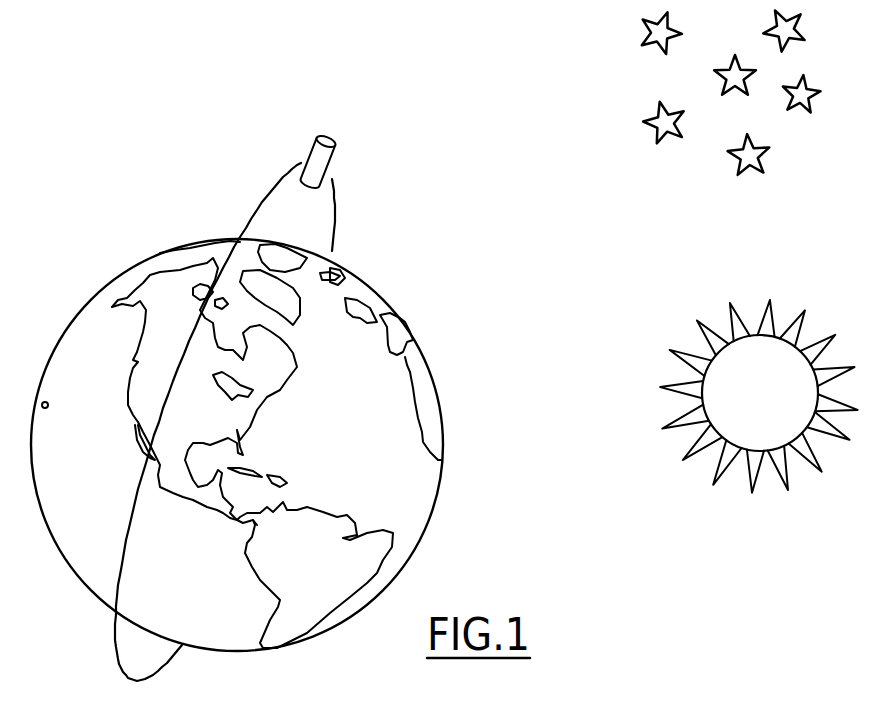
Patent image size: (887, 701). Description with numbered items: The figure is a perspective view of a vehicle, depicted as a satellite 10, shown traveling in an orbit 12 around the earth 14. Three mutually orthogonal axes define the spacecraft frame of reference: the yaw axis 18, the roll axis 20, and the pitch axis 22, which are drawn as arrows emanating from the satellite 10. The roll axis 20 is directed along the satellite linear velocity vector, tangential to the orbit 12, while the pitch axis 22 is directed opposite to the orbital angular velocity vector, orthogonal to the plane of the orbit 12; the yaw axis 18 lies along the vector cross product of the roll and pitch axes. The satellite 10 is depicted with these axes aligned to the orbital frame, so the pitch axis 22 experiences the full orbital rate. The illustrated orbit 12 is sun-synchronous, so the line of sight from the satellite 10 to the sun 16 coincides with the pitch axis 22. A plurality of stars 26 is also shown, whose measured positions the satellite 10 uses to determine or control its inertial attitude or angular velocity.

The satellite 10 is at (312, 138).
The orbit 12 is at (263, 202).
The earth 14 is at (443, 453).
The sun 16 is at (758, 396).
The yaw axis 18 is at (330, 134).
The roll axis 20 is at (343, 153).
The pitch axis 22 is at (333, 165).
The stars 26 is at (763, 112).